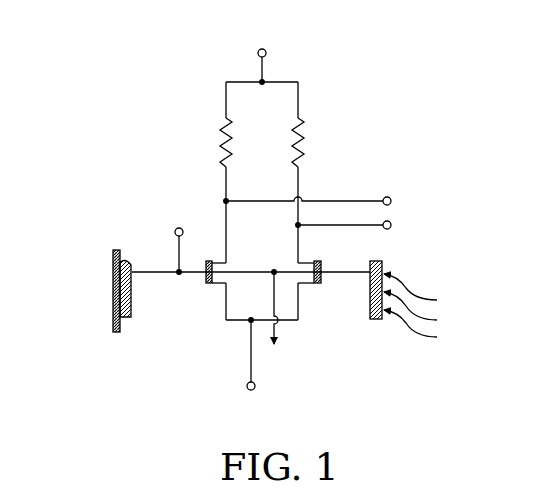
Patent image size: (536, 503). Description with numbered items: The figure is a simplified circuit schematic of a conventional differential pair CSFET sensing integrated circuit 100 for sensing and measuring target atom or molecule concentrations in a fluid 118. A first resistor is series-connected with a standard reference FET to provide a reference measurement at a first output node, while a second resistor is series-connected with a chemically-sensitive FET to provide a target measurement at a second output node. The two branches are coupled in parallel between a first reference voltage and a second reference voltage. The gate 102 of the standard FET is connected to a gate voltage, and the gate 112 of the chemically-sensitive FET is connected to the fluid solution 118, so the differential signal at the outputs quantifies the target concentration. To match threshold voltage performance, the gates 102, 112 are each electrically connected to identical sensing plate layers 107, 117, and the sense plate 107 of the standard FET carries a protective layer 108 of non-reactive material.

The differential pair CSFET sensing integrated circuit 100 is at (91, 52).
The gate of standard reference FET N1 102 is at (206, 284).
The sense plate of standard FET 107 is at (130, 316).
The protective layer 108 is at (113, 300).
The gate of chemically-sensitive FET N2 112 is at (319, 261).
The sense plate of chemically-sensitive FET 117 is at (370, 311).
The fluid 118 is at (478, 328).